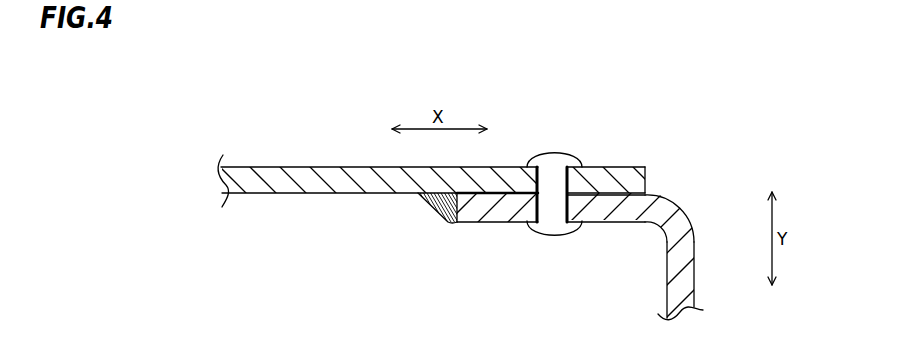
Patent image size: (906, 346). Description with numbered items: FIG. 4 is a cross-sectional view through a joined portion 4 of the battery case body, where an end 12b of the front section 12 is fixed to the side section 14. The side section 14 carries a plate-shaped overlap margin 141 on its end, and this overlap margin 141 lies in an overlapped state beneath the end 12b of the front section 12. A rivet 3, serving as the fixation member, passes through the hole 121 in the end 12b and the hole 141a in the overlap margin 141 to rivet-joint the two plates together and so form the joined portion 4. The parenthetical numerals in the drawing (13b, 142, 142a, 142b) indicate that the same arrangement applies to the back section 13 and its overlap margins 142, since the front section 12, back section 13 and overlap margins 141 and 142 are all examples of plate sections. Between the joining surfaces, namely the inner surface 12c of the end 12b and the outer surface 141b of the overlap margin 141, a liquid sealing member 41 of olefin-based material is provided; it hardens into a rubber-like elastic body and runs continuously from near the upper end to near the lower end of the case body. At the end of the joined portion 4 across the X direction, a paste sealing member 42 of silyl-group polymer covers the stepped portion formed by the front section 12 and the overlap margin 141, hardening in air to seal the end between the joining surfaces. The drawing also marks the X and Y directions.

The rivet 3 is at (554, 152).
The joined portion 4 is at (514, 288).
The front section 12 is at (267, 193).
The back section 13 is at (382, 188).
The end of the front section 12b is at (602, 175).
The plate portion 13b is at (613, 180).
The inner surface of the end of the front section 12c is at (645, 201).
The hole 121 is at (564, 177).
The side section 14 is at (686, 292).
The liquid sealing member 41 is at (617, 196).
The paste sealing member 42 is at (433, 207).
The overlap margin 141 is at (471, 213).
The overlap margin 142 is at (619, 253).
The hole 141a is at (572, 226).
The first portion of reinforcing plate 142a is at (632, 256).
The outer surface of the overlap margin 141b is at (478, 194).
The second portion of reinforcing plate 142b is at (507, 207).